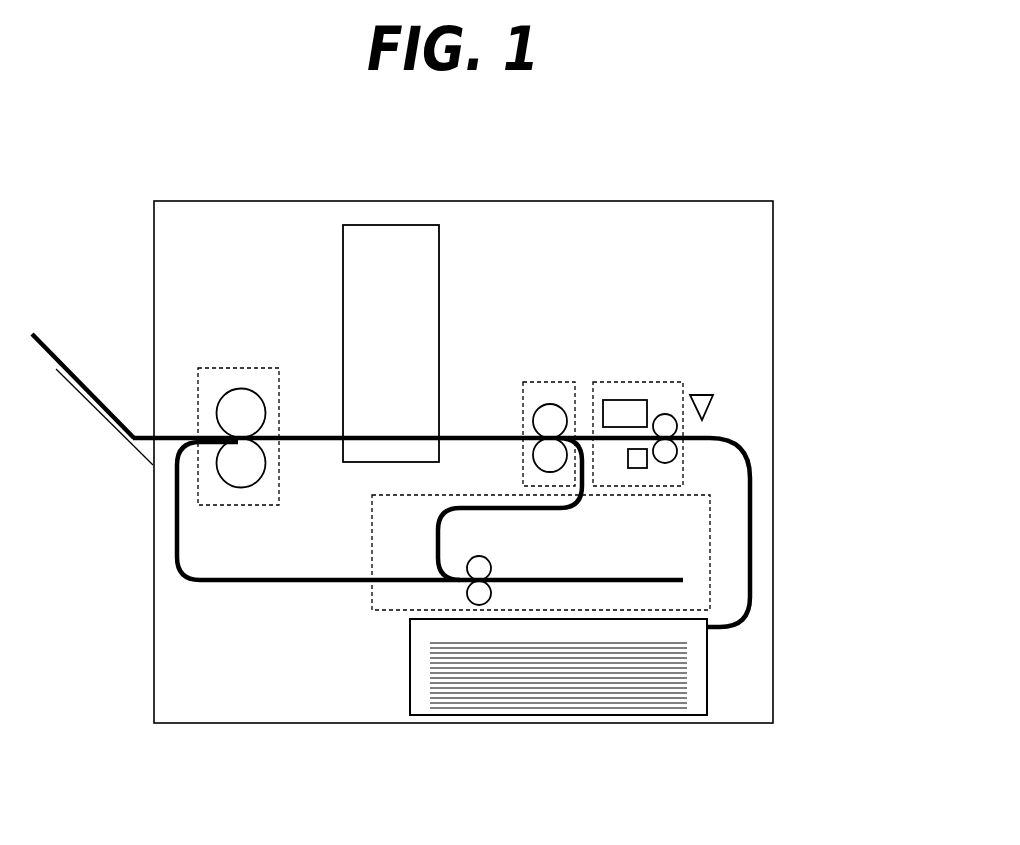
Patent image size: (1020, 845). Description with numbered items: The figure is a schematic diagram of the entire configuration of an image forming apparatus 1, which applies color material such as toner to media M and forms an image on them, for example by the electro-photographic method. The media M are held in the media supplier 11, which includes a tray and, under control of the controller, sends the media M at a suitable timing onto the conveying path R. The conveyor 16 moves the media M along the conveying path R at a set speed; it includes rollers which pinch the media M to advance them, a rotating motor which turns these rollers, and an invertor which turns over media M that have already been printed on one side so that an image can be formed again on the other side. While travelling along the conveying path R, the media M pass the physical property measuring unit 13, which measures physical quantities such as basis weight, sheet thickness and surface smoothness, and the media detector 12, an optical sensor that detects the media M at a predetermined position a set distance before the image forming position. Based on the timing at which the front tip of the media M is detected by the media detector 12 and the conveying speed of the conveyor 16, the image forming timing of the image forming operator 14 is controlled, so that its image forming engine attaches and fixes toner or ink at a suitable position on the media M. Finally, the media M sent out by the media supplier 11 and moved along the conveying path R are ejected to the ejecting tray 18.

The image forming apparatus 1 is at (862, 200).
The media supplier 11 is at (658, 716).
The media detector 12 is at (706, 391).
The physical property measuring unit 13 is at (632, 380).
The image forming operator 14 is at (393, 235).
The conveyor 16 is at (232, 507).
The ejecting tray 18 is at (138, 455).
The conveying path R is at (752, 533).
The media M is at (430, 668).